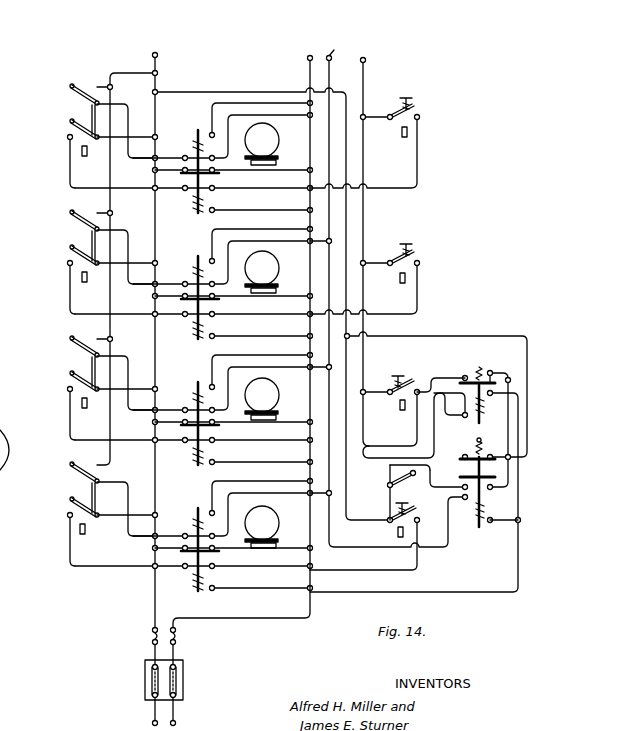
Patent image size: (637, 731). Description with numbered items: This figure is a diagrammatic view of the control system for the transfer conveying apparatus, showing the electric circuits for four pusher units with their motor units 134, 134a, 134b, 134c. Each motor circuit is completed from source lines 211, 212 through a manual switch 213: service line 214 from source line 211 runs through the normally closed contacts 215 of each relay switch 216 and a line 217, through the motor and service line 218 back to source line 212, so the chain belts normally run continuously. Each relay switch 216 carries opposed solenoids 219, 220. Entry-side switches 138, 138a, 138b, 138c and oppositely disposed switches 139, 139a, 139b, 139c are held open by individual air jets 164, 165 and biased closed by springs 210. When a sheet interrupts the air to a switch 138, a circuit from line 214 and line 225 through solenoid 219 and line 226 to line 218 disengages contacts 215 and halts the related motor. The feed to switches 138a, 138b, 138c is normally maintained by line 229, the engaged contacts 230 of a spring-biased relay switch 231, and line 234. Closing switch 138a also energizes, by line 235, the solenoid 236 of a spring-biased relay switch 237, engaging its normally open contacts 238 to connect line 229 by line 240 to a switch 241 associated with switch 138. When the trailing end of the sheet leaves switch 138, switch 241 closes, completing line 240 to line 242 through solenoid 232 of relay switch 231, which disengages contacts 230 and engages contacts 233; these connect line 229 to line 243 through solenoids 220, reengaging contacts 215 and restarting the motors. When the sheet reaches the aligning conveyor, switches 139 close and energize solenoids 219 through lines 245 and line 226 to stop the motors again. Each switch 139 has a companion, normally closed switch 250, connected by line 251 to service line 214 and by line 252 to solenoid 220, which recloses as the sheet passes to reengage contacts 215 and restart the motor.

The motor unit 134 is at (283, 506).
The motor unit 134a is at (268, 391).
The motor unit 134b is at (268, 264).
The motor unit 134c is at (268, 136).
The switch 138 is at (389, 518).
The switch 138a is at (390, 398).
The switch 138b is at (412, 259).
The switch 138c is at (411, 113).
The switch 139 is at (67, 515).
The switch 139a is at (67, 389).
The switch 139b is at (67, 263).
The switch 139c is at (67, 137).
The air jet 164 is at (402, 137).
The air jet 165 is at (85, 157).
The spring 210 is at (79, 120).
The source line 211 is at (152, 710).
The source line 212 is at (177, 712).
The manual switch 213 is at (145, 675).
The service line 214 is at (157, 108).
The normally closed contacts 215 is at (214, 175).
The relay switch 216 is at (188, 203).
The line 217 is at (258, 166).
The service line 218 is at (309, 71).
The solenoid 219 is at (206, 200).
The solenoid 220 is at (194, 142).
The line 225 is at (257, 188).
The line 226 is at (245, 207).
The line 229 is at (432, 337).
The contacts 230 is at (462, 446).
The spring-biased relay switch 231 is at (470, 520).
The solenoid 232 is at (485, 503).
The contacts 233 is at (486, 493).
The line 234 is at (365, 72).
The line 235 is at (427, 382).
The solenoid 236 is at (482, 411).
The spring-biased relay switch 237 is at (465, 404).
The normally open contacts 238 is at (490, 371).
The line 240 is at (450, 376).
The switch 241 is at (389, 485).
The line 242 is at (437, 482).
The line 243 is at (430, 562).
The line 245 is at (129, 187).
The switch 250 is at (73, 88).
The line 251 is at (97, 86).
The line 252 is at (125, 103).